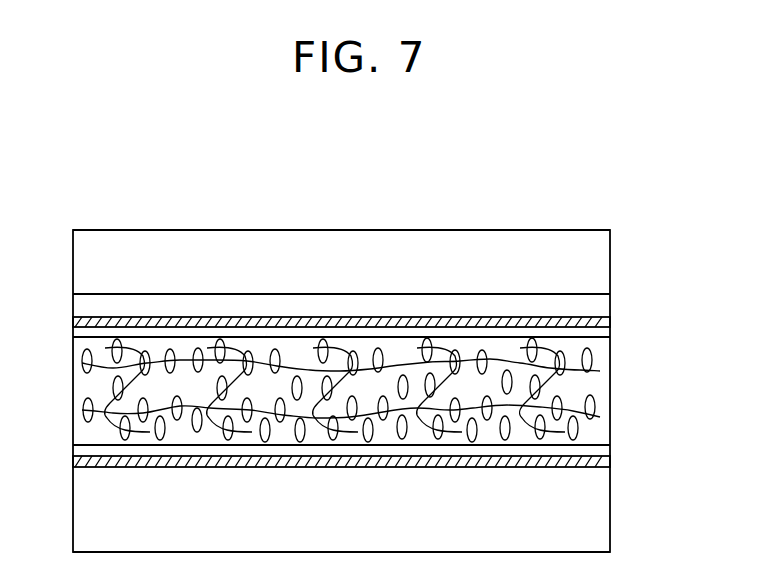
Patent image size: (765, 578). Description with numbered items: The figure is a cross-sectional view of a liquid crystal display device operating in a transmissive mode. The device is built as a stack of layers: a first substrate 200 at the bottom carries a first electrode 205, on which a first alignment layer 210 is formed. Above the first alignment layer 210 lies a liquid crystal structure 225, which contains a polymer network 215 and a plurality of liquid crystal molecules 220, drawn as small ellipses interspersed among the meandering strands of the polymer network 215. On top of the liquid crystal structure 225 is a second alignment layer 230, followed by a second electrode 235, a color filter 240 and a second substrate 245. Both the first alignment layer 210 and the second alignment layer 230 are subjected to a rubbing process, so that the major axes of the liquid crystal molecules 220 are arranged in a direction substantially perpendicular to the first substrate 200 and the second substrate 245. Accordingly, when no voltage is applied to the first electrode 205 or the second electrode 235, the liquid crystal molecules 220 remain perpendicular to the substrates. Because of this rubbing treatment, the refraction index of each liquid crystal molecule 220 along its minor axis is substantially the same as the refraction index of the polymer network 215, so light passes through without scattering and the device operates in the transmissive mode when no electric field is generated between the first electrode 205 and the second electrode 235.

The first substrate 200 is at (605, 506).
The first electrode 205 is at (606, 462).
The first alignment layer 210 is at (605, 448).
The polymer network 215 is at (535, 385).
The liquid crystal molecules 220 is at (588, 358).
The liquid crystal structure 225 is at (418, 390).
The second alignment layer 230 is at (605, 333).
The second electrode 235 is at (606, 320).
The color filter 240 is at (605, 301).
The second substrate 245 is at (605, 248).